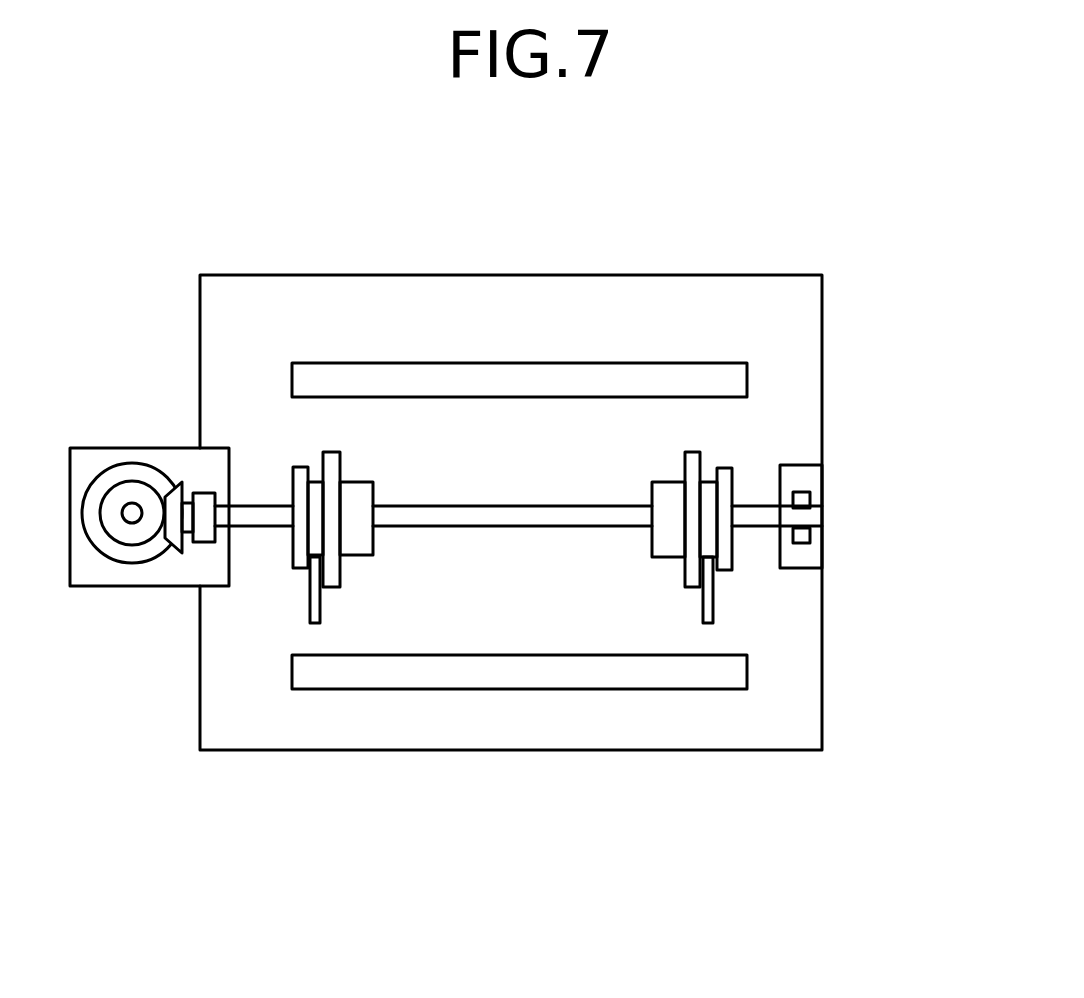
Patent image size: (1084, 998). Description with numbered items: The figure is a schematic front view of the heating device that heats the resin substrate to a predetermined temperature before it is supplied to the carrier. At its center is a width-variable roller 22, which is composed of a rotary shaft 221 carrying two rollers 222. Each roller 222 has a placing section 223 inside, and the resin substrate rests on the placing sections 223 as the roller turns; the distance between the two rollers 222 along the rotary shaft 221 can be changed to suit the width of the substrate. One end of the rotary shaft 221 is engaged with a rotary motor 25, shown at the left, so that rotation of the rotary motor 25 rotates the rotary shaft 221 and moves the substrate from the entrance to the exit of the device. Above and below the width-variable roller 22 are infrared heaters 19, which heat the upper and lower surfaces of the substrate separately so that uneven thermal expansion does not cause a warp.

The infrared heater 19 is at (527, 378).
The width-variable roller 22 is at (547, 528).
The rotary motor 25 is at (132, 562).
The rotary shaft 221 is at (747, 528).
The roller 222 is at (700, 453).
The placing section 223 is at (355, 528).